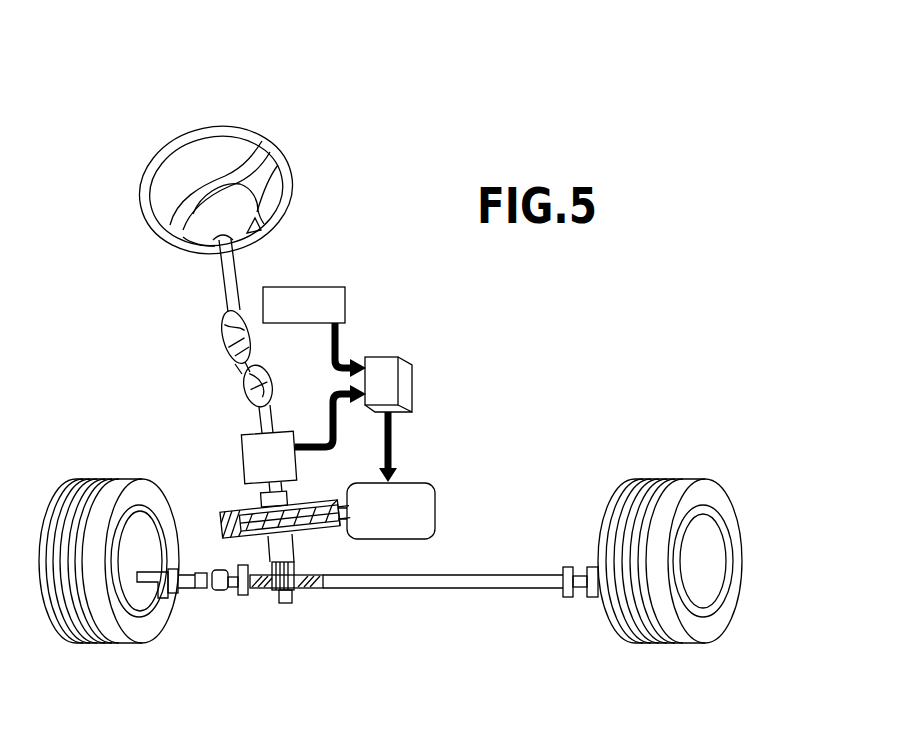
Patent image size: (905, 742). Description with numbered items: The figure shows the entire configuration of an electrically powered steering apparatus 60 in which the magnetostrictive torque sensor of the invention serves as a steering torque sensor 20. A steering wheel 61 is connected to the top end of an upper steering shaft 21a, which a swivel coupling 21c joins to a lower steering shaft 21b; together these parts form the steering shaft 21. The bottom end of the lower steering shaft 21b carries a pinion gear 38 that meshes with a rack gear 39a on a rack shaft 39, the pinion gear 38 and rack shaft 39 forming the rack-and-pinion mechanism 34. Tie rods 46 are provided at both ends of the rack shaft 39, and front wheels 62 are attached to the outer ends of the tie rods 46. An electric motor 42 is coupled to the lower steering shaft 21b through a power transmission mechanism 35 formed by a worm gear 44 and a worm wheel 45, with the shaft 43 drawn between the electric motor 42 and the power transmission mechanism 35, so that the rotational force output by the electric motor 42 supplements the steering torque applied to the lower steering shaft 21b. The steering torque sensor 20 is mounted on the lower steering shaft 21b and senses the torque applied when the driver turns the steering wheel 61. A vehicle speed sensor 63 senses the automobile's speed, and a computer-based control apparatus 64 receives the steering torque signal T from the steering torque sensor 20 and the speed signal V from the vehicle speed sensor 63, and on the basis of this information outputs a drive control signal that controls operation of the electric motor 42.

The electrically powered steering apparatus 60 is at (262, 92).
The steering wheel 61 is at (280, 147).
The steering shaft 21 is at (212, 338).
The upper steering shaft 21a is at (240, 273).
The lower steering shaft 21b is at (245, 388).
The swivel coupling 21c is at (228, 323).
The steering torque sensor 20 is at (248, 442).
The vehicle speed sensor 63 is at (316, 288).
The control apparatus 64 is at (384, 357).
The front wheels 62 is at (92, 479).
The worm wheel 45 is at (222, 528).
The power transmission mechanism 35 is at (312, 500).
The electric motor 42 is at (432, 510).
The motor output shaft 43 is at (344, 528).
The worm gear 44 is at (294, 531).
The tie rods 46 is at (189, 590).
The pinion gear 38 is at (276, 595).
The rack shaft 39 is at (427, 590).
The rack gear 39a is at (306, 590).
The rack-and-pinion mechanism 34 is at (297, 613).